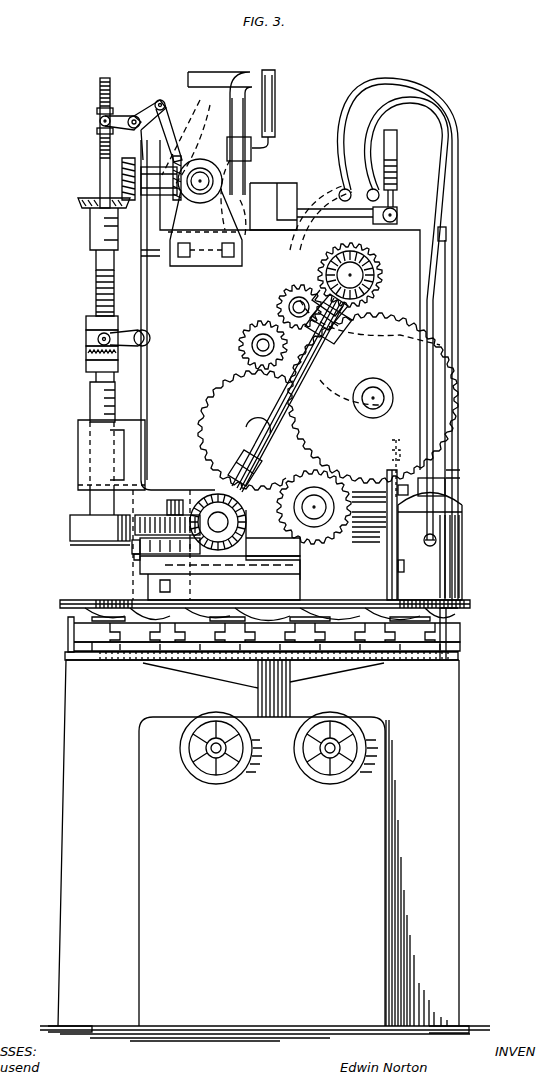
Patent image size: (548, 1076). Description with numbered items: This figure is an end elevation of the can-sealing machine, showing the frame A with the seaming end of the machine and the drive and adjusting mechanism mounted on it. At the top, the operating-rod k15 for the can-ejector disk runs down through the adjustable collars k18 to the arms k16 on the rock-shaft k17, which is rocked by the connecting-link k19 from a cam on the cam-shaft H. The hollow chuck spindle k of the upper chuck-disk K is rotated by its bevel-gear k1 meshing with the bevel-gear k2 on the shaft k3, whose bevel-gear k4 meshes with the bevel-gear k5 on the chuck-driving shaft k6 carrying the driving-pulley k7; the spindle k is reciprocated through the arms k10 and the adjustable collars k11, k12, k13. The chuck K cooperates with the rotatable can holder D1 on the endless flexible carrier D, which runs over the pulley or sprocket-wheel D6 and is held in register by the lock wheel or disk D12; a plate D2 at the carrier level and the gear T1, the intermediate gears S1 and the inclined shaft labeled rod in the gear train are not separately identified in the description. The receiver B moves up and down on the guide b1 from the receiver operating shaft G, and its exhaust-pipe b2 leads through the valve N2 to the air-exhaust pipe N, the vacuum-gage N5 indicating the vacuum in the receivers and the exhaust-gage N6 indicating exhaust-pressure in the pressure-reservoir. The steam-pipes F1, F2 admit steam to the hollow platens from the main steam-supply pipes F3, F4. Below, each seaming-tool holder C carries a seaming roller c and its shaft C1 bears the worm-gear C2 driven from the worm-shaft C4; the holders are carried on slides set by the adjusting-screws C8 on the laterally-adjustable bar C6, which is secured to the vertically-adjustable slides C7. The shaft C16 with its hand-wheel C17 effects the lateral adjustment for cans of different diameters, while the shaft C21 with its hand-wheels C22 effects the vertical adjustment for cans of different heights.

The frame A is at (265, 590).
The vacuum chamber or receiver B is at (424, 535).
The upper chuck-disk K is at (70, 523).
The receiver operating shaft G is at (385, 398).
The cam-shaft H is at (252, 430).
The gear T' T1 is at (344, 275).
The intermediate gears S1 is at (280, 327).
The connecting shaft rod is at (290, 391).
The guide b1 is at (394, 518).
The exhaust-pipe b2 is at (446, 183).
The air-exhaust pipe N is at (398, 215).
The valve N2 is at (311, 206).
The vacuum-gage N5 is at (390, 148).
The exhaust-gage N6 is at (250, 95).
The steam-pipe F1 is at (456, 290).
The steam-pipe F2 is at (410, 88).
The main steam-supply pipe F3 is at (368, 191).
The main steam-supply pipe F4 is at (340, 194).
The hollow chuck spindle k is at (95, 404).
The bevel-gear k1 is at (80, 203).
The bevel-gear k2 is at (124, 178).
The shaft k3 is at (156, 172).
The bevel-gear k4 is at (178, 168).
The bevel-gear k5 is at (205, 160).
The chuck-driving shaft k6 is at (201, 185).
The driving-pulley k7 is at (204, 158).
The arm k10 is at (95, 345).
The adjustable collar k11 is at (86, 337).
The adjustable collar k12 is at (88, 322).
The adjustable collar k13 is at (88, 362).
The operating-rod k15 is at (99, 80).
The arm k16 is at (113, 117).
The rock-shaft k17 is at (138, 116).
The adjustable collar k18 is at (97, 115).
The connecting-link k19 is at (170, 118).
The seaming-tool holder C is at (134, 551).
The seaming tool or roller c is at (138, 544).
The tool-holder shaft C1 is at (167, 508).
The worm-gear C2 is at (135, 528).
The worm-shaft C4 is at (217, 528).
The laterally-adjustable bar C6 is at (300, 548).
The vertically-adjustable slide C7 is at (156, 565).
The adjusting-screw C8 is at (137, 560).
The shaft C16 is at (322, 754).
The hand-wheel C17 is at (326, 788).
The shaft C21 is at (210, 752).
The hand-wheel C22 is at (210, 786).
The endless flexible carrier D is at (143, 636).
The rotatable can holder or disk D1 is at (62, 612).
The plate D2 is at (484, 590).
The pulley or sprocket-wheel D6 is at (458, 650).
The lock wheel or disk D12 is at (442, 662).